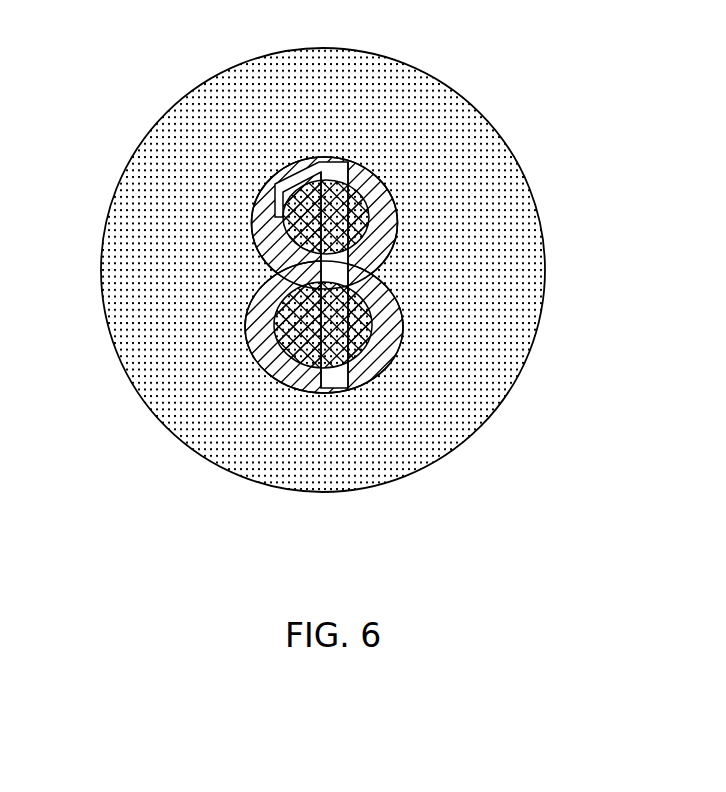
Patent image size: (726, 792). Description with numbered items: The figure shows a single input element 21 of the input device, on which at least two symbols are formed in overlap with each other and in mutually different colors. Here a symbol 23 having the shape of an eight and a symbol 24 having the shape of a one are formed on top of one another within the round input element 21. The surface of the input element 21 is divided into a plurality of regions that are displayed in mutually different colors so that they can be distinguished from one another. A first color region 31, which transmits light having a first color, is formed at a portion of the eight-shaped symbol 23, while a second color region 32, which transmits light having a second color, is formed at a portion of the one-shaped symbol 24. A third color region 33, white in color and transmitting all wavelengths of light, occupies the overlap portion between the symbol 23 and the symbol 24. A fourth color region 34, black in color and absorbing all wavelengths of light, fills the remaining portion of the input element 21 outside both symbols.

The input element 21 is at (104, 192).
The symbol 23 is at (378, 173).
The symbol 24 is at (388, 354).
The first color region 31 is at (297, 163).
The second color region 32 is at (398, 209).
The third color region 33 is at (334, 168).
The fourth color region 34 is at (449, 104).